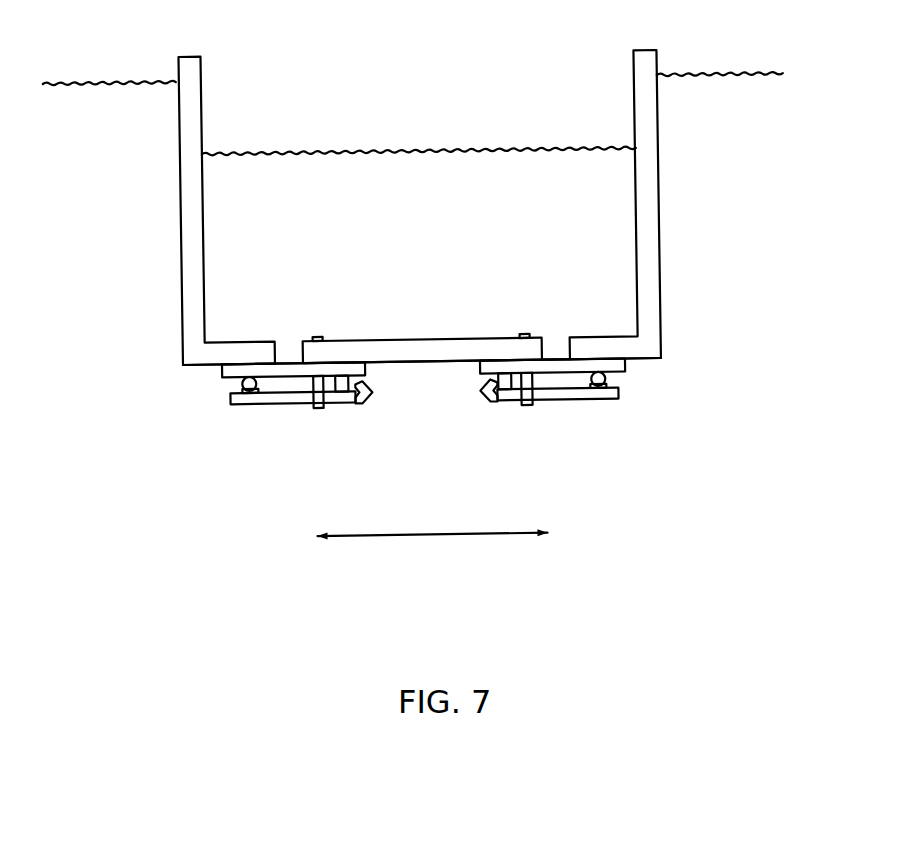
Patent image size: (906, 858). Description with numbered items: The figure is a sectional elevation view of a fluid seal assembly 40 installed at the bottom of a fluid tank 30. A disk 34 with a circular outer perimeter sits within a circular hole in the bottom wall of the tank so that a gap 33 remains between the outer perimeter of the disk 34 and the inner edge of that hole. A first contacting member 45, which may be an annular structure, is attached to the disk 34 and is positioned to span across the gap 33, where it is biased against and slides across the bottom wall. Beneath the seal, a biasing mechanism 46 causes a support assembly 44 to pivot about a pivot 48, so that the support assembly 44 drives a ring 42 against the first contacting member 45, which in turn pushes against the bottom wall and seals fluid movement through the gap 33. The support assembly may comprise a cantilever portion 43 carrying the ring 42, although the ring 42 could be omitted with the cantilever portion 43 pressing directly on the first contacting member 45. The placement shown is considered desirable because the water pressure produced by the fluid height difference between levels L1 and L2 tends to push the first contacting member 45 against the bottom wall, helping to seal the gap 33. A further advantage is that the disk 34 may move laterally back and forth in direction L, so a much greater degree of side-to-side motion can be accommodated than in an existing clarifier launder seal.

The fluid tank 30 is at (196, 205).
The gap 33 is at (556, 345).
The disk 34 is at (428, 353).
The fluid seal assembly 40 is at (558, 416).
The ring 42 is at (240, 388).
The cantilever portion 43 is at (297, 405).
The support assembly 44 is at (620, 409).
The first contacting member 45 is at (290, 361).
The biasing mechanism 46 is at (320, 410).
The pivot 48 is at (353, 380).
The fluid height level L1 is at (113, 82).
The fluid height level L2 is at (428, 153).
The lateral direction L is at (423, 535).